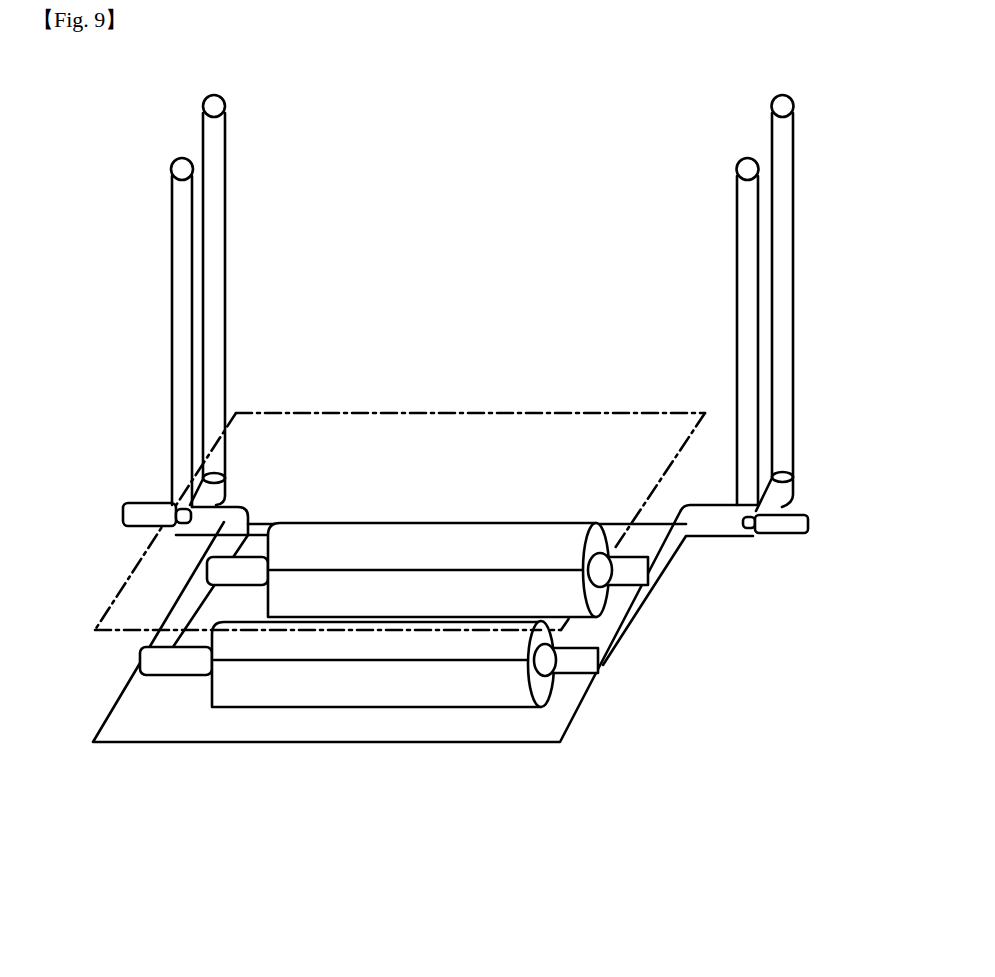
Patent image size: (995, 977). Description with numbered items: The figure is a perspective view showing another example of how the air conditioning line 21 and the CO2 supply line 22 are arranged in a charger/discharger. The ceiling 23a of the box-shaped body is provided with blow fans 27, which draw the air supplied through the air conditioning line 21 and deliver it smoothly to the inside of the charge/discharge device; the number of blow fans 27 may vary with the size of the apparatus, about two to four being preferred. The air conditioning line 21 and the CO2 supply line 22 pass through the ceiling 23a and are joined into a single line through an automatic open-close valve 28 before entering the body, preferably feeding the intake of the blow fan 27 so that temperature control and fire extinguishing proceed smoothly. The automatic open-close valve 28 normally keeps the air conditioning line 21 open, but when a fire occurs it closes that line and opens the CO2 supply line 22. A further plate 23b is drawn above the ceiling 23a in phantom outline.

The air conditioning line 21 is at (742, 293).
The CO2 supply line 22 is at (783, 252).
The ceiling 23a is at (560, 713).
The upper plate 23b is at (404, 412).
The blow fan 27 is at (431, 688).
The automatic open-close valve 28 is at (795, 535).